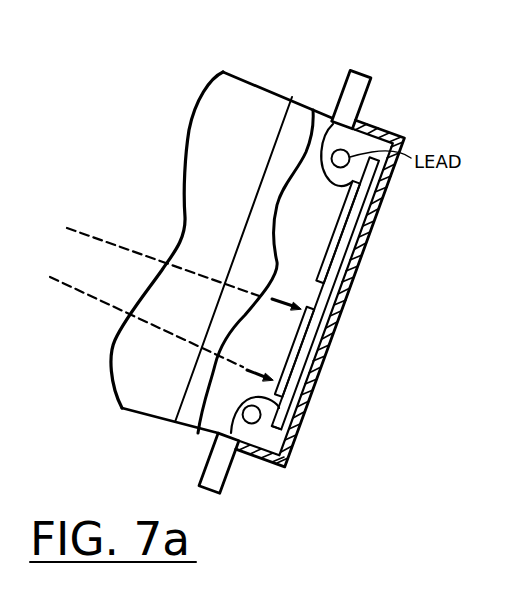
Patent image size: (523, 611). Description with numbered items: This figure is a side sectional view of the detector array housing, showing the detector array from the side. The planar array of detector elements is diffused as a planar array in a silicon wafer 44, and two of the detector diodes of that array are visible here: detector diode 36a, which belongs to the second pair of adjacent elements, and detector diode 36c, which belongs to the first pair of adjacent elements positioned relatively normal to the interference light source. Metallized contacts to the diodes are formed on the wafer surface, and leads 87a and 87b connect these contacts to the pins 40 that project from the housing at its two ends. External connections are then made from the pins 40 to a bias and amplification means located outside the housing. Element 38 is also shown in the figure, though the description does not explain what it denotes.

The pins 40 is at (367, 78).
The lead 87a is at (343, 187).
The lead 87b is at (263, 400).
The silicon wafer 44 is at (318, 292).
The detector diode 36a is at (334, 230).
The detector diode 36c is at (285, 365).
The circuit board 38 is at (278, 430).